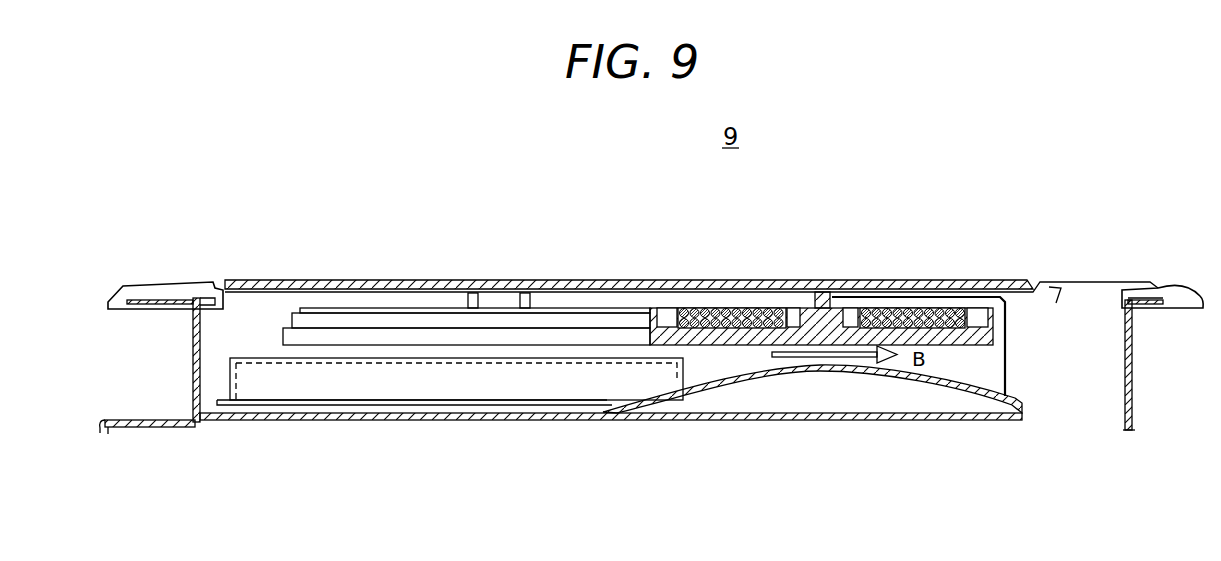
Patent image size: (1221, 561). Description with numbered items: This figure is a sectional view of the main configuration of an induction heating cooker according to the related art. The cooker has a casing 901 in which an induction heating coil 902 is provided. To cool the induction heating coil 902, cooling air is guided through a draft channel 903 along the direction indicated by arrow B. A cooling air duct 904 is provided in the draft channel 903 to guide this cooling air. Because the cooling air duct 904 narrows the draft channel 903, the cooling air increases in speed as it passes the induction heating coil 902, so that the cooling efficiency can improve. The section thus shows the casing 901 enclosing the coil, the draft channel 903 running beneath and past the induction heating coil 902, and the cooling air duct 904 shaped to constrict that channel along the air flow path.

The casing 901 is at (1132, 408).
The induction heating coil 902 is at (897, 308).
The draft channel 903 is at (1008, 345).
The cooling air duct 904 is at (743, 372).